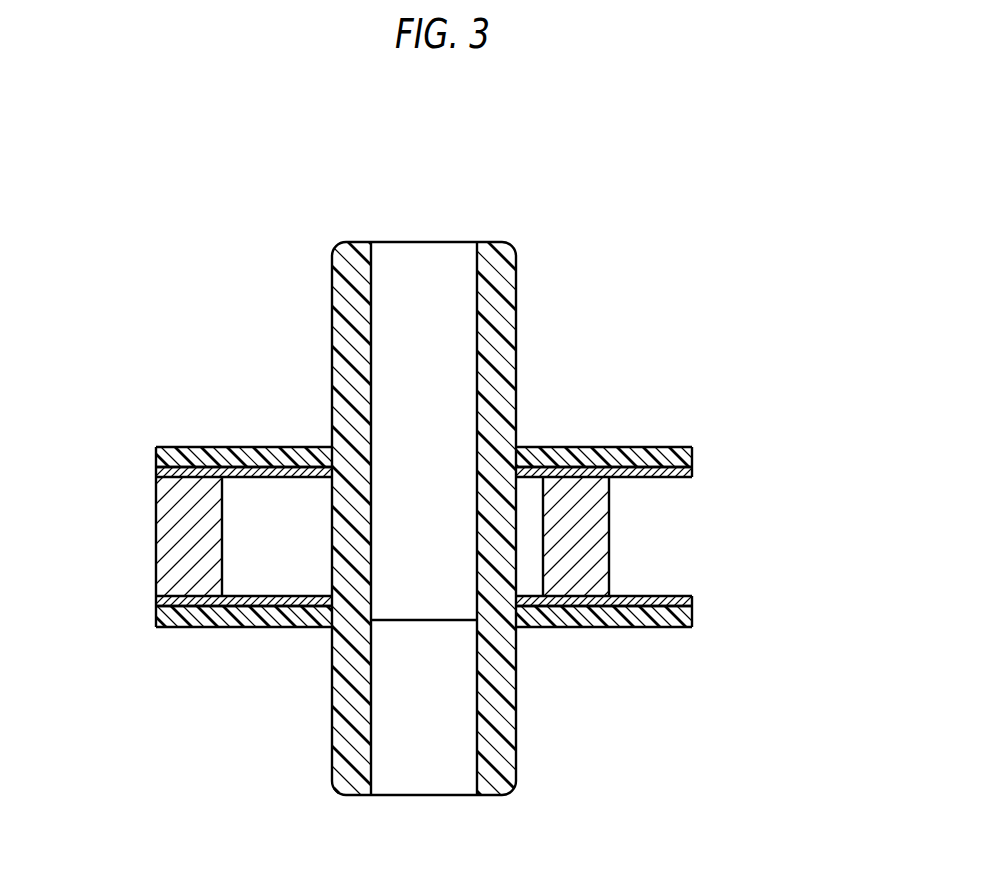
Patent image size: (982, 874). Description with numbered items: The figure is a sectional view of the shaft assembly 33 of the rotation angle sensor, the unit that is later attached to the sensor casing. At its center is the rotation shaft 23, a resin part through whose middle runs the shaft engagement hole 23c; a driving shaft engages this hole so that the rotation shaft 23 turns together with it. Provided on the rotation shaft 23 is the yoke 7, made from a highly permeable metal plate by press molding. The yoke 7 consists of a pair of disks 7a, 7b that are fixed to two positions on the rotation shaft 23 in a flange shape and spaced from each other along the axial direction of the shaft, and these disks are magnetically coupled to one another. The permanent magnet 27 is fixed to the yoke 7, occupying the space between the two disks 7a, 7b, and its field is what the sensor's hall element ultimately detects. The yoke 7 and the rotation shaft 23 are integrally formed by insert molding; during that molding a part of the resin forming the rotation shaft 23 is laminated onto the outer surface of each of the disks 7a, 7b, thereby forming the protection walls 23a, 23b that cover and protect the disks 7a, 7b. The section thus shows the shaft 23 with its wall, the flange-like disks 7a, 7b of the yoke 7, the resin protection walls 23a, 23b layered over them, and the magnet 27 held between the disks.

The shaft assembly 33 is at (507, 228).
The rotation shaft 23 is at (517, 298).
The shaft engagement hole 23c is at (477, 292).
The protection wall 23a is at (650, 465).
The protection wall 23b is at (650, 613).
The yoke 7 is at (826, 482).
The disk 7a is at (668, 478).
The disk 7b is at (673, 597).
The permanent magnet 27 is at (155, 550).